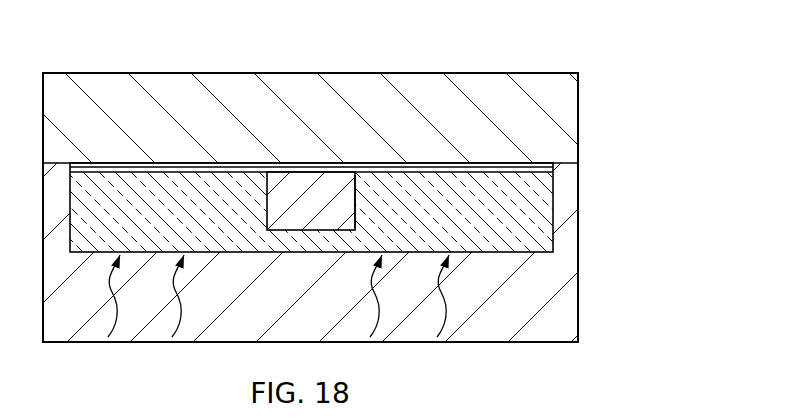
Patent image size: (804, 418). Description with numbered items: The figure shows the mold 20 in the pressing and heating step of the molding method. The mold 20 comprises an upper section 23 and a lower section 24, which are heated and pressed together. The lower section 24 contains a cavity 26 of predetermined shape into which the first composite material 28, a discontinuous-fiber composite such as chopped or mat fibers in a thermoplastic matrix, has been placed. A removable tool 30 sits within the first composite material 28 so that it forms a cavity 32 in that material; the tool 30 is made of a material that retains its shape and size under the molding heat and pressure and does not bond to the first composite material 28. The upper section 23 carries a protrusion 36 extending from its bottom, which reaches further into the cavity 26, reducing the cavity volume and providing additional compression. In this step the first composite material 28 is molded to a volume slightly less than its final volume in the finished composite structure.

The mold 20 is at (560, 55).
The upper section 23 is at (299, 132).
The lower section 24 is at (317, 313).
The cavity 26 is at (558, 241).
The first composite material 28 is at (173, 226).
The removable tool 30 is at (317, 215).
The cavity 32 is at (360, 202).
The protrusion 36 is at (535, 168).